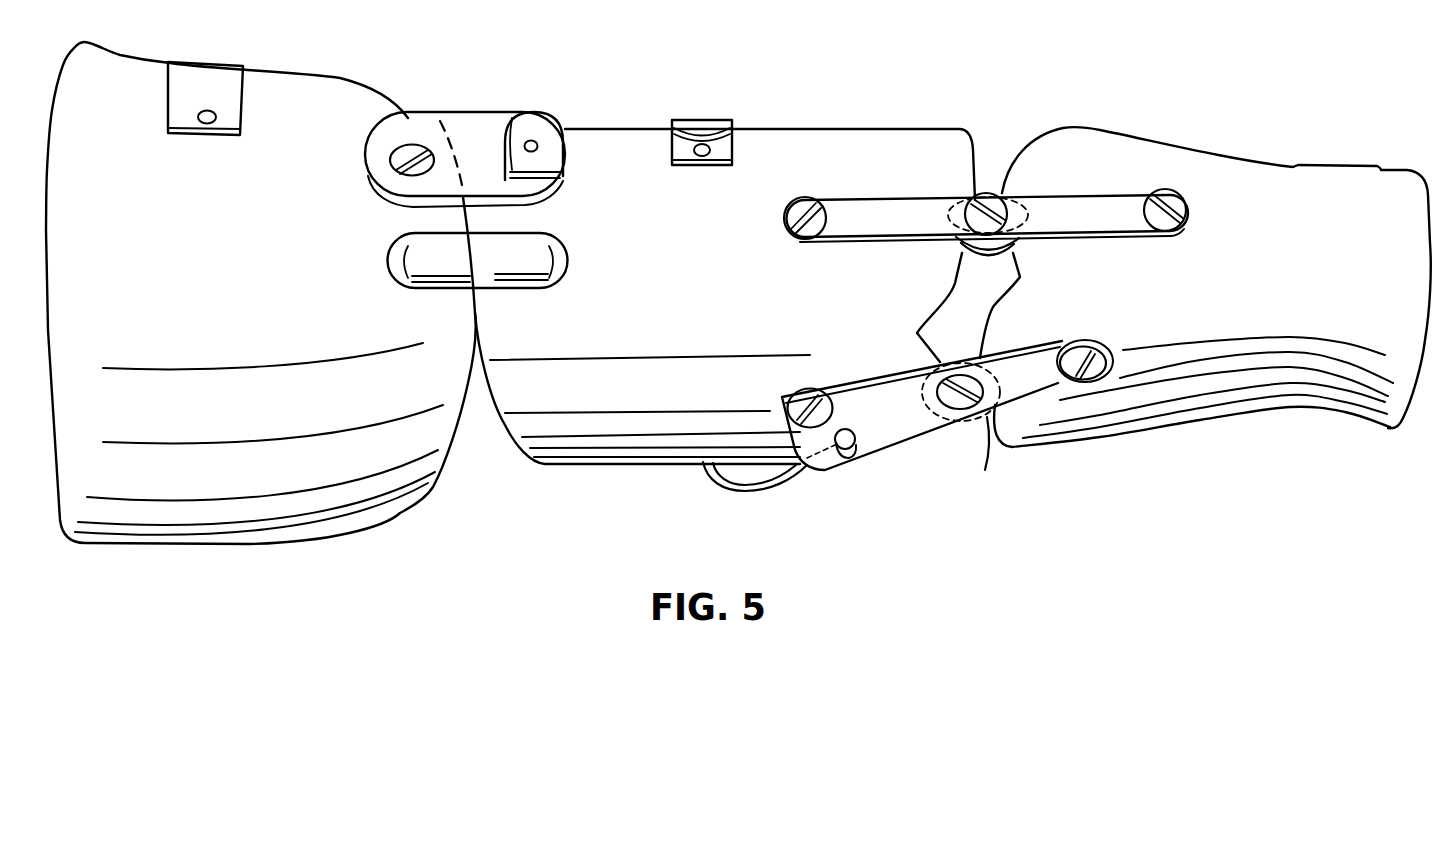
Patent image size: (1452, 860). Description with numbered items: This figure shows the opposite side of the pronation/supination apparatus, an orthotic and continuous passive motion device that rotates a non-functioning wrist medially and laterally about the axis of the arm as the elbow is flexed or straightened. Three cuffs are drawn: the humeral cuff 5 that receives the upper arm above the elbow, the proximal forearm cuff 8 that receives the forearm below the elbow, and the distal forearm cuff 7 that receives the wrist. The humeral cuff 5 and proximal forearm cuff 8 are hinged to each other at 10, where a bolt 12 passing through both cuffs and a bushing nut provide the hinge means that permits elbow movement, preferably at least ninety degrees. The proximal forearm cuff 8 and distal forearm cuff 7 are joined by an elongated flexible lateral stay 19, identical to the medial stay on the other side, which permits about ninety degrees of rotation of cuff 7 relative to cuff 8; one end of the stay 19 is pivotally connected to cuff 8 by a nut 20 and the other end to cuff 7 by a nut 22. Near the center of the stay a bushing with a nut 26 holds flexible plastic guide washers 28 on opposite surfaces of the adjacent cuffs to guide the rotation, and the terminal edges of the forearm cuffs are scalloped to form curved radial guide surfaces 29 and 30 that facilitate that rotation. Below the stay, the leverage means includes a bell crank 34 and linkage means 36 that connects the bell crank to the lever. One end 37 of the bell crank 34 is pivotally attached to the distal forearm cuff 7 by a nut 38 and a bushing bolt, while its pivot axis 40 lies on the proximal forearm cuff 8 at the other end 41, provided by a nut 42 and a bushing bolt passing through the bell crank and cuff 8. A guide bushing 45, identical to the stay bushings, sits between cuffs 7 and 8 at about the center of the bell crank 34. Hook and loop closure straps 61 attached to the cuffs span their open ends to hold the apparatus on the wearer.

The humeral cuff 5 is at (407, 495).
The distal forearm cuff 7 is at (1268, 397).
The proximal forearm cuff 8 is at (653, 445).
The hinge 10 is at (410, 130).
The bolt 12 is at (392, 155).
The lateral stay 19 is at (876, 213).
The nut 20 is at (812, 228).
The nut 22 is at (1175, 207).
The nut 26 is at (983, 201).
The guide washer 28 is at (1008, 254).
The curved radial guide surface 29 is at (992, 461).
The curved radial guide surface 30 is at (950, 298).
The bell crank 34 is at (1043, 360).
The linkage means 36 is at (772, 482).
The end of bell crank 37 is at (1108, 347).
The nut 38 is at (1095, 372).
The pivot axis 40 is at (817, 392).
The end of bell crank 41 is at (790, 428).
The nut 42 is at (790, 402).
The guide bushing 45 is at (920, 373).
The hook and loop closure strap 61 is at (228, 76).